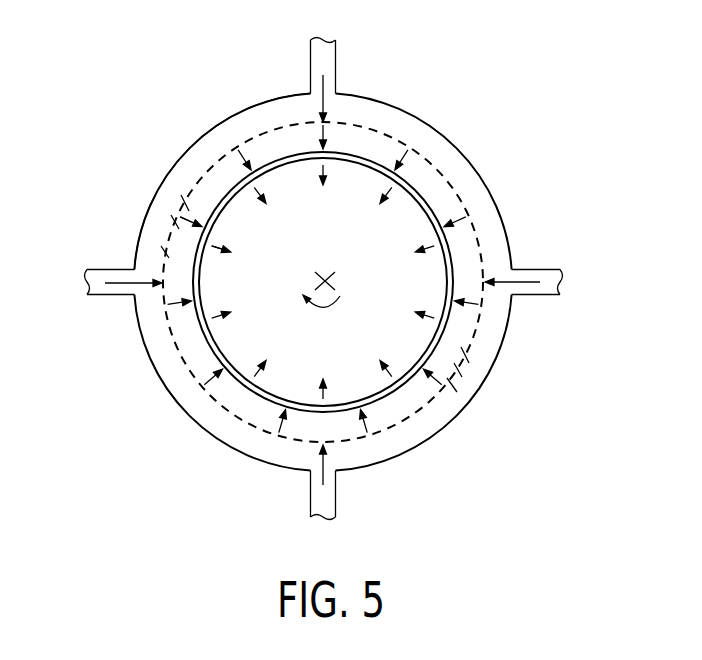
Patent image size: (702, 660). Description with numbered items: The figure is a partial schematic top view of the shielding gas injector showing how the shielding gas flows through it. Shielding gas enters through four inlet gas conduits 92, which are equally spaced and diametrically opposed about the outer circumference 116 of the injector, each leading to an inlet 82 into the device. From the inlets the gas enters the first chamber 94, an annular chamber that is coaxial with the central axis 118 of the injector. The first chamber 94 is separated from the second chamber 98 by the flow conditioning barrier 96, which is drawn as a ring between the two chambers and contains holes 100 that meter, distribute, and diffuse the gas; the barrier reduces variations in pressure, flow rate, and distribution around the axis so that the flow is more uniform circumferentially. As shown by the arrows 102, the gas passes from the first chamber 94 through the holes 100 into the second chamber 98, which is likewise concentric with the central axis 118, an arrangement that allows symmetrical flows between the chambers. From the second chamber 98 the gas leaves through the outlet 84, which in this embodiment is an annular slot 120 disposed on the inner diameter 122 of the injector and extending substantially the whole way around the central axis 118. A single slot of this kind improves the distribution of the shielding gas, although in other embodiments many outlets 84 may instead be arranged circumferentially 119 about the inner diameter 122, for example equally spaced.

The inlet 82 is at (345, 80).
The outlet 84 is at (280, 153).
The inlet gas conduits 92 is at (310, 80).
The first chamber 94 is at (433, 430).
The flow conditioning barrier 96 is at (437, 168).
The second chamber 98 is at (377, 147).
The holes 100 is at (165, 252).
The arrows 102 is at (213, 250).
The outer circumference 116 is at (187, 150).
The central axis 118 is at (332, 279).
The circumferential direction 119 is at (322, 308).
The annular slot 120 is at (420, 210).
The inner diameter 122 is at (420, 352).